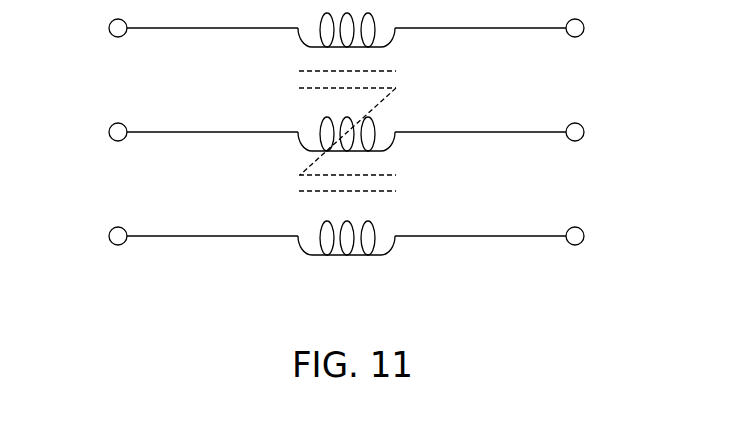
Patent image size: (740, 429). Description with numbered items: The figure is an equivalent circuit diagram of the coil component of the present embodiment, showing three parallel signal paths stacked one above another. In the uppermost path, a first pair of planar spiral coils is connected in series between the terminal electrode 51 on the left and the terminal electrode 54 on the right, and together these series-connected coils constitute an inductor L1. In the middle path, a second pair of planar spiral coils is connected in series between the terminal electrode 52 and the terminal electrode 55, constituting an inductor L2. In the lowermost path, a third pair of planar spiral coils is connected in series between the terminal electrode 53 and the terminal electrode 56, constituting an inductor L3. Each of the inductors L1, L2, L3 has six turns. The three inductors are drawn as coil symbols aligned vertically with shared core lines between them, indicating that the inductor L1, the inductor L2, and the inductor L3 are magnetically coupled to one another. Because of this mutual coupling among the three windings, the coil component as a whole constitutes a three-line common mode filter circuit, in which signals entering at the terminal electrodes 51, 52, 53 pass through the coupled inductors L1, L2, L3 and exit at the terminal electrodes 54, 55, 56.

The terminal electrode 51 is at (108, 30).
The terminal electrode 52 is at (108, 134).
The terminal electrode 53 is at (108, 238).
The terminal electrode 54 is at (585, 27).
The terminal electrode 55 is at (585, 131).
The terminal electrode 56 is at (585, 235).
The inductor L1 is at (395, 39).
The inductor L2 is at (395, 143).
The inductor L3 is at (395, 247).